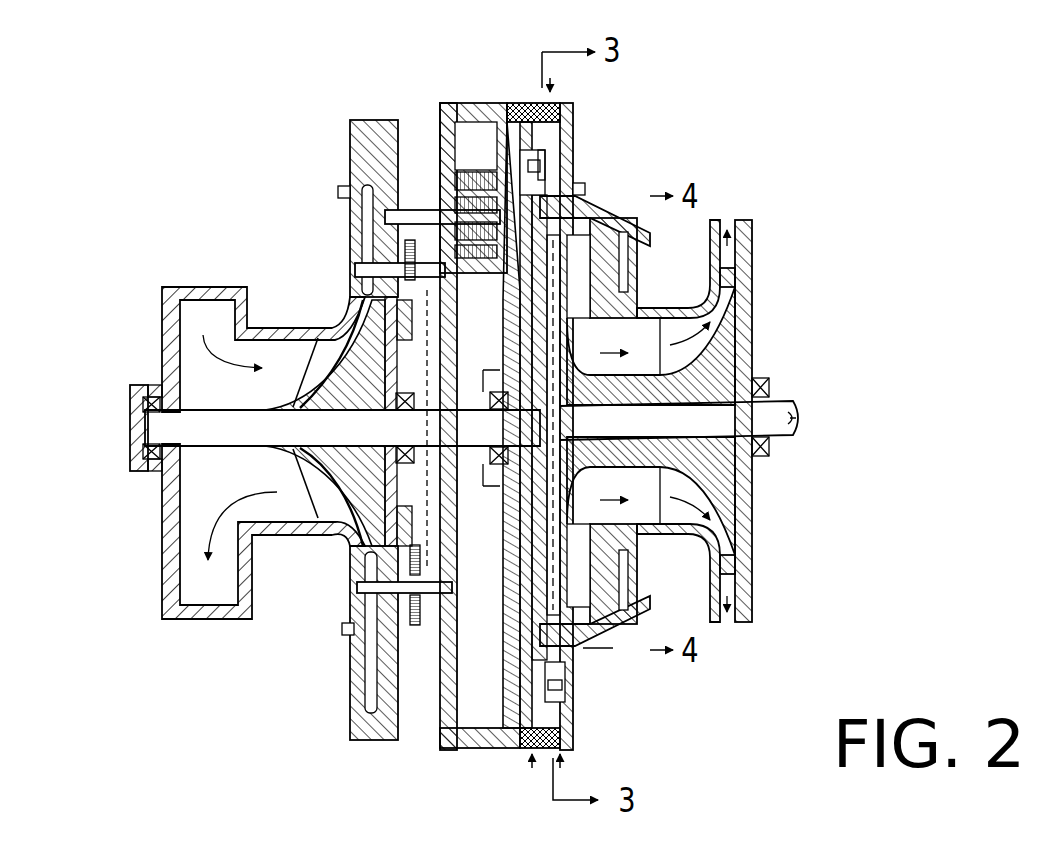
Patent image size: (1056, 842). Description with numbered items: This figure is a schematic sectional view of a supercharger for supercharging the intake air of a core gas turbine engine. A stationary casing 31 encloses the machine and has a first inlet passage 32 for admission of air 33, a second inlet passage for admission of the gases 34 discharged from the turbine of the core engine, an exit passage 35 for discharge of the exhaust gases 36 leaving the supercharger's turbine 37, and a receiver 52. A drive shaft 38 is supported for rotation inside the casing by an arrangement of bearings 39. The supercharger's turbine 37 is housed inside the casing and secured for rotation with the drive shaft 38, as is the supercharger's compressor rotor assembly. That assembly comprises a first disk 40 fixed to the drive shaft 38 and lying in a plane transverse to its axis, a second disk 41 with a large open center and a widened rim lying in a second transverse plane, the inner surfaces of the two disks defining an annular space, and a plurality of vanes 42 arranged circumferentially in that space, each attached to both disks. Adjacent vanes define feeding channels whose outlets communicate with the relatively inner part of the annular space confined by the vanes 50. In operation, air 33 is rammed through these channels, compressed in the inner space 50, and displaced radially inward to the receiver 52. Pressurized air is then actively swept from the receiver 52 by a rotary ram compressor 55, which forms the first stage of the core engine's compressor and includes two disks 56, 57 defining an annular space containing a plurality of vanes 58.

The stationary casing 31 is at (347, 167).
The first inlet passage 32 is at (535, 136).
The air 33 is at (546, 97).
The gases discharged from the turbine of the core engine 34 is at (367, 213).
The exit passage 35 is at (254, 322).
The exhaust gases 36 is at (206, 362).
The supercharger's turbine 37 is at (316, 528).
The drive shaft 38 is at (250, 455).
The bearings 39 is at (132, 478).
The first disk 40 is at (517, 708).
The second disk 41 is at (556, 685).
The vanes 42 is at (567, 700).
The relatively inner part of the annular space confined by the vanes 50 is at (562, 172).
The receiver 52 is at (557, 205).
The rotary ram compressor 55 is at (630, 244).
The disk 56 is at (637, 565).
The disk 57 is at (630, 604).
The vanes 58 is at (637, 277).